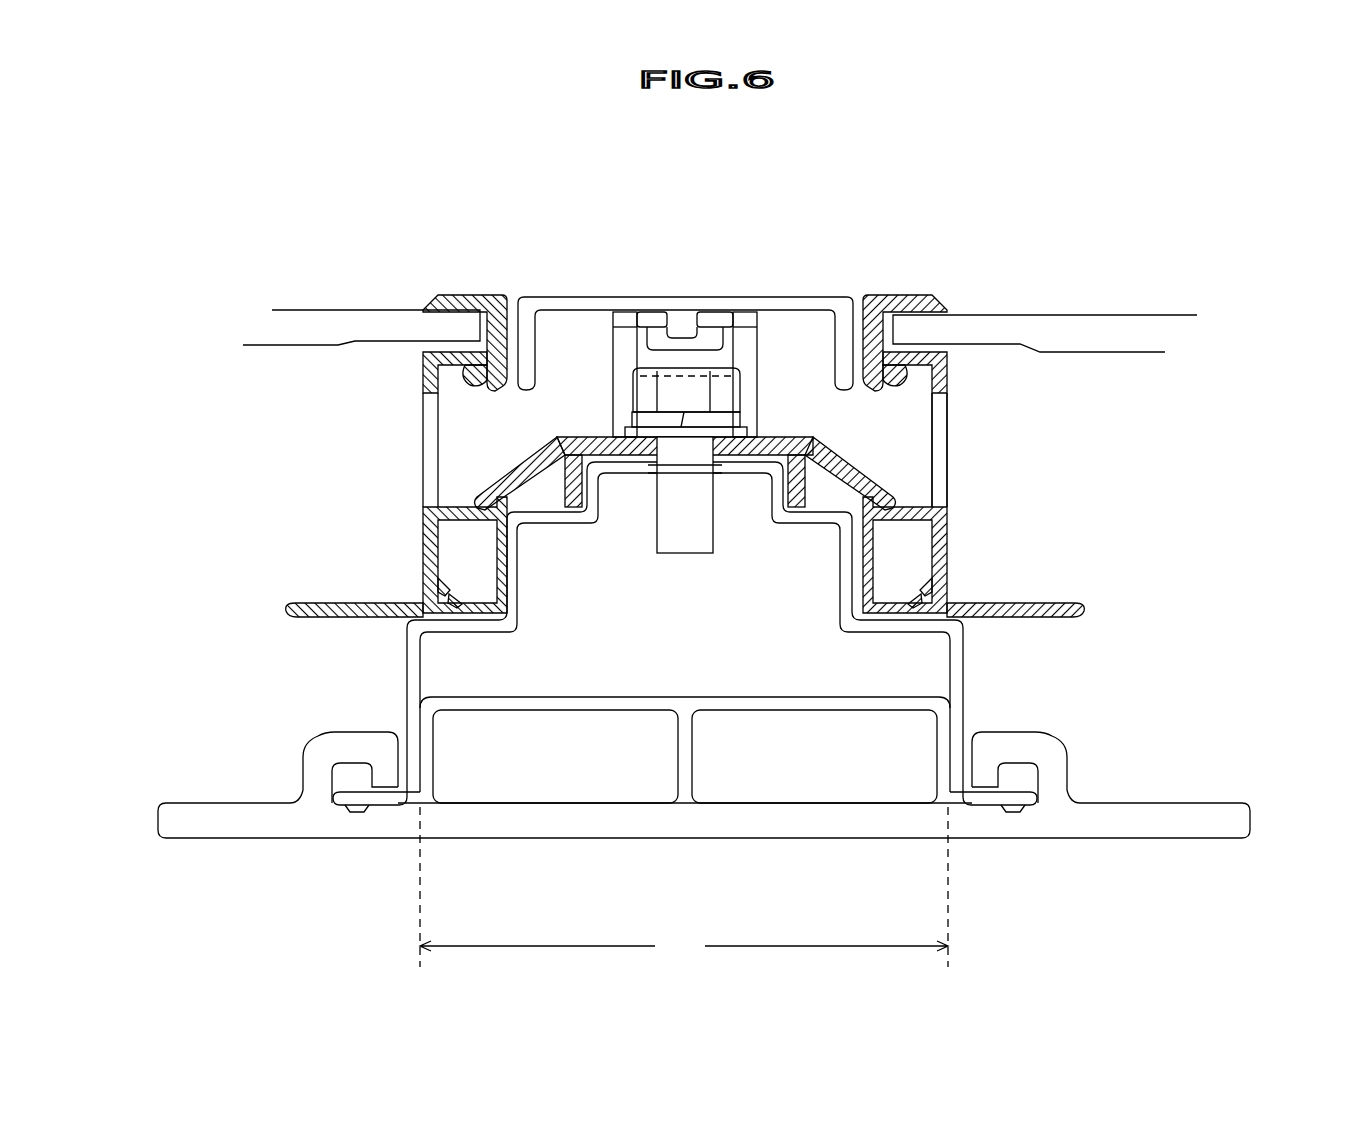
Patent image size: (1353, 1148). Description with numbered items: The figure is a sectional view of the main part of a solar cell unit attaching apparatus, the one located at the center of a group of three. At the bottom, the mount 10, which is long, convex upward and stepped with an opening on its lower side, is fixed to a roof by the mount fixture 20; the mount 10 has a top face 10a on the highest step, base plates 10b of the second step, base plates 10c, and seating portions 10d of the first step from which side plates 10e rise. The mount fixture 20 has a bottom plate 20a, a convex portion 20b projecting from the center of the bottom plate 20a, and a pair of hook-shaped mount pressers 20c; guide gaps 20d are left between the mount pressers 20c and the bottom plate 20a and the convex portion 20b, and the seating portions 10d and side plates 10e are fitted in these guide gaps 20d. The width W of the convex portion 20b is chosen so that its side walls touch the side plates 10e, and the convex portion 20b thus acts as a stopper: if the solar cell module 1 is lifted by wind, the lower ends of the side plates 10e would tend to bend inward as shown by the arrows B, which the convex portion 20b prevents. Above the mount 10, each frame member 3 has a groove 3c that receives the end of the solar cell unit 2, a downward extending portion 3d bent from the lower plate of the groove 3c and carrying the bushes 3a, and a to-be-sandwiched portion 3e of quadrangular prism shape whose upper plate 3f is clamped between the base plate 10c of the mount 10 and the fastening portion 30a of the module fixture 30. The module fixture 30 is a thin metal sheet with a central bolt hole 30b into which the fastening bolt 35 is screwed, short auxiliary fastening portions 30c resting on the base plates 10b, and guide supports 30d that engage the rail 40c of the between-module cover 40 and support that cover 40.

The solar cell module 1 is at (957, 299).
The solar cell unit 2 is at (337, 312).
The frame member 3 is at (425, 557).
The bush 3a is at (947, 402).
The groove 3c is at (481, 326).
The downward extending portion 3d is at (948, 375).
The to-be-sandwiched portion 3e is at (947, 580).
The upper plate 3f is at (945, 505).
The mount 10 is at (960, 662).
The top face 10a is at (737, 470).
The base plate 10b is at (800, 527).
The base plate 10c is at (483, 633).
The seating portion 10d is at (997, 808).
The side plate 10e is at (407, 668).
The mount fixture 20 is at (1135, 838).
The bottom plate 20a is at (853, 834).
The convex portion 20b is at (627, 712).
The mount presser 20c is at (353, 737).
The guide gap 20d is at (405, 720).
The module fixture 30 is at (597, 442).
The fastening portion 30a is at (885, 480).
The bolt hole 30b is at (657, 470).
The auxiliary fastening portion 30c is at (580, 508).
The guide support 30d is at (752, 340).
The fastening bolt 35 is at (734, 395).
The between-module cover 40 is at (558, 306).
The rail 40c is at (685, 322).
The arrows B is at (458, 793).
The width W is at (684, 887).